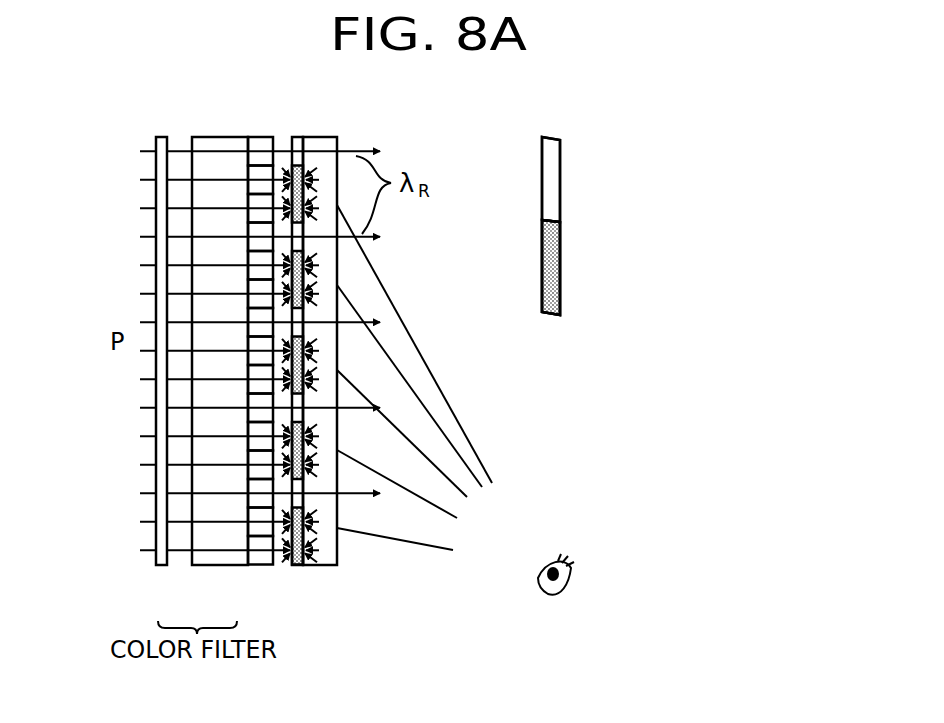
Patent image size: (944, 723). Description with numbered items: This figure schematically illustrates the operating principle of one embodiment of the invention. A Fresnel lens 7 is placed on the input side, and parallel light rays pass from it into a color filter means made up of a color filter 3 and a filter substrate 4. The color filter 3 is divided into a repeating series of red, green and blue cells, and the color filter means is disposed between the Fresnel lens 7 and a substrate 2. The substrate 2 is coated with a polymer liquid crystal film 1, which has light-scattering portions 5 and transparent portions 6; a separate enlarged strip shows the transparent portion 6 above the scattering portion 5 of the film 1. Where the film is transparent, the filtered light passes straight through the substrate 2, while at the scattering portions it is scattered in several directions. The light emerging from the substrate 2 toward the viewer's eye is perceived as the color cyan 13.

The polymer liquid crystal film 1 is at (294, 567).
The substrate 2 is at (328, 565).
The color filter 3 is at (257, 565).
The filter substrate 4 is at (207, 560).
The light-scattering portion 5 is at (557, 255).
The transparent portion 6 is at (557, 163).
The Fresnel lens 7 is at (165, 137).
The cyan 13 is at (483, 377).